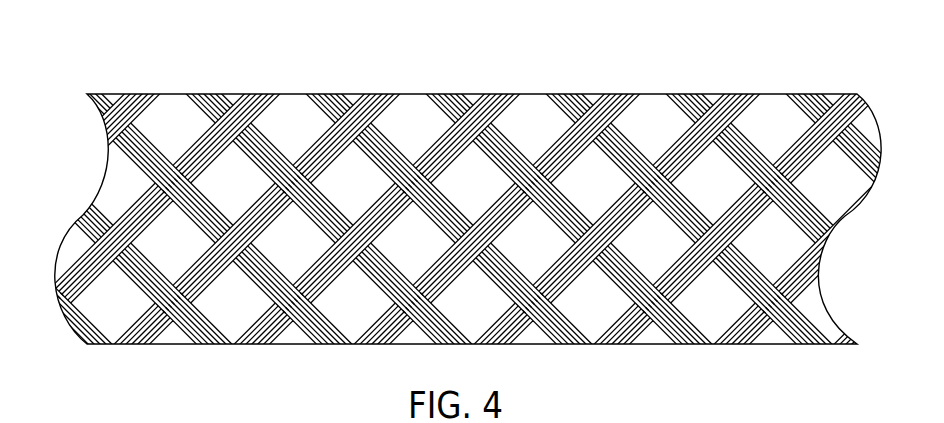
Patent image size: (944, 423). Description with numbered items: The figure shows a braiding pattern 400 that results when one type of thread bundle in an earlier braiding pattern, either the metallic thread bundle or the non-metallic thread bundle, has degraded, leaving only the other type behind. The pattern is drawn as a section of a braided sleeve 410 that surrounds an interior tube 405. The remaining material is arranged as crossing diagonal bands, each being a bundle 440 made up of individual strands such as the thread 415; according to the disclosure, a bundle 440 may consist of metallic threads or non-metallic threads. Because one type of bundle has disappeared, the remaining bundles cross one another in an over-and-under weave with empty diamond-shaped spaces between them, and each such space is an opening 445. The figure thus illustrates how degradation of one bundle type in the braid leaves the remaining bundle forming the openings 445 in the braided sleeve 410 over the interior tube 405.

The braiding pattern 400 is at (790, 71).
The interior tube 405 is at (95, 328).
The braided sleeve 410 is at (239, 354).
The thread 415 is at (360, 100).
The bundle 440 is at (565, 85).
The opening 445 is at (529, 112).